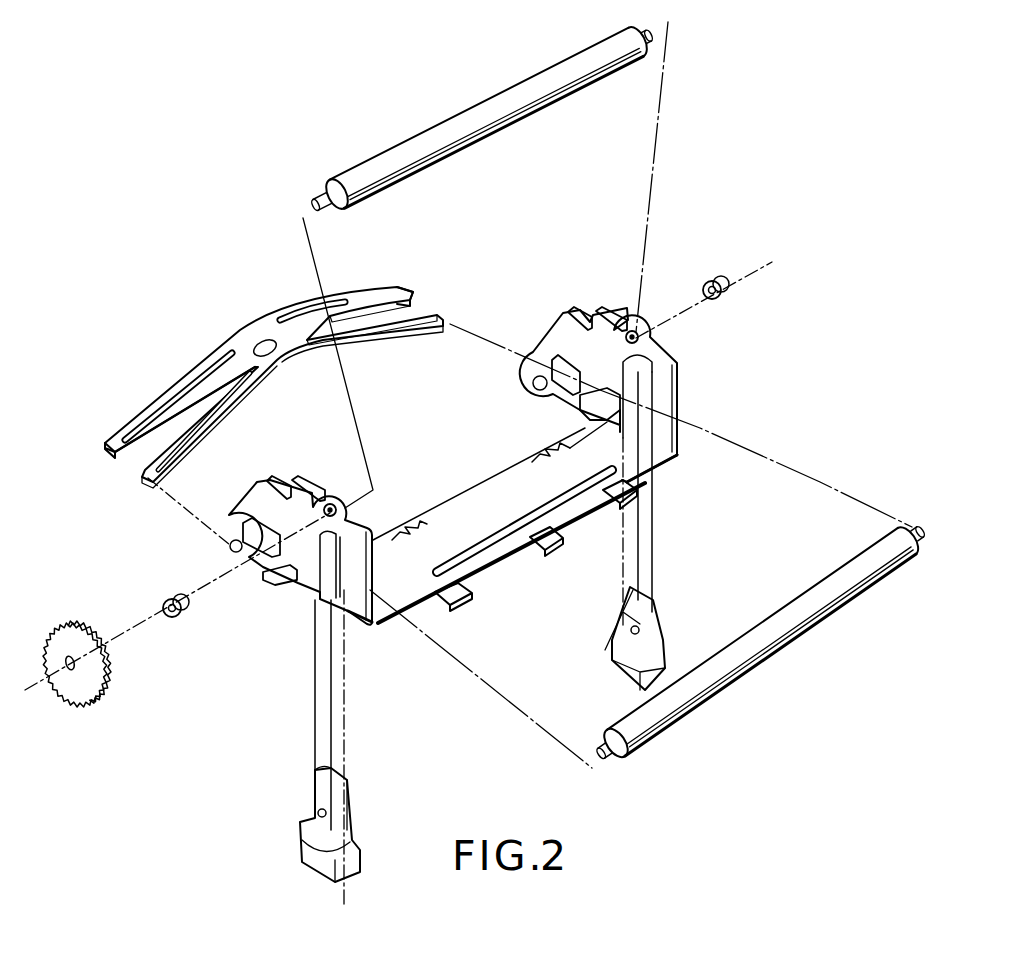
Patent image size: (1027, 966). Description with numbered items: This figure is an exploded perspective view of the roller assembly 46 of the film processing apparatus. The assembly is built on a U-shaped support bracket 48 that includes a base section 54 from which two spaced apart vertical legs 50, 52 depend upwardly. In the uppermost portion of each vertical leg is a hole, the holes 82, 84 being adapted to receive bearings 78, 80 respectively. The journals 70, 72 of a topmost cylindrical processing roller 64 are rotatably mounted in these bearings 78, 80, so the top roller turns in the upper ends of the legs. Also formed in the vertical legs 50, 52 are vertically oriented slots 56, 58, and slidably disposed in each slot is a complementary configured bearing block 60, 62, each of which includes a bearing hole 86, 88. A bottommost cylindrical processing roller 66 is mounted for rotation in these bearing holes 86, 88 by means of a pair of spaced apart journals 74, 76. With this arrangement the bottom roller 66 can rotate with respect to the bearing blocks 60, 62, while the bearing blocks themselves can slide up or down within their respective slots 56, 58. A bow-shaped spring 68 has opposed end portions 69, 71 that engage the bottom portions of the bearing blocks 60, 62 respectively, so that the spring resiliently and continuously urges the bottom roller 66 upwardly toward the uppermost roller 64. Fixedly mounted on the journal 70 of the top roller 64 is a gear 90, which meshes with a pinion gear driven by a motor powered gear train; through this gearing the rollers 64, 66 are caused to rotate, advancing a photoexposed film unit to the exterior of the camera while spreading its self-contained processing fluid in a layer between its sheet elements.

The roller assembly 46 is at (704, 224).
The support bracket 48 is at (499, 558).
The vertical leg 50 is at (373, 572).
The vertical leg 52 is at (678, 390).
The base section 54 is at (436, 596).
The slot 56 is at (320, 550).
The slot 58 is at (647, 356).
The bearing block 60 is at (351, 822).
The bearing block 62 is at (661, 633).
The topmost cylindrical processing roller 64 is at (478, 114).
The bottommost cylindrical processing roller 66 is at (760, 662).
The bow-shaped spring 68 is at (252, 330).
The end portion 69 is at (107, 442).
The journal 70 is at (314, 202).
The end portion 71 is at (408, 289).
The journal 72 is at (646, 31).
The journal 74 is at (603, 759).
The journal 76 is at (917, 526).
The bearing 78 is at (181, 611).
The bearing 80 is at (727, 289).
The hole 82 is at (324, 511).
The hole 84 is at (627, 345).
The bearing hole 86 is at (317, 812).
The bearing hole 88 is at (635, 634).
The gear 90 is at (108, 670).